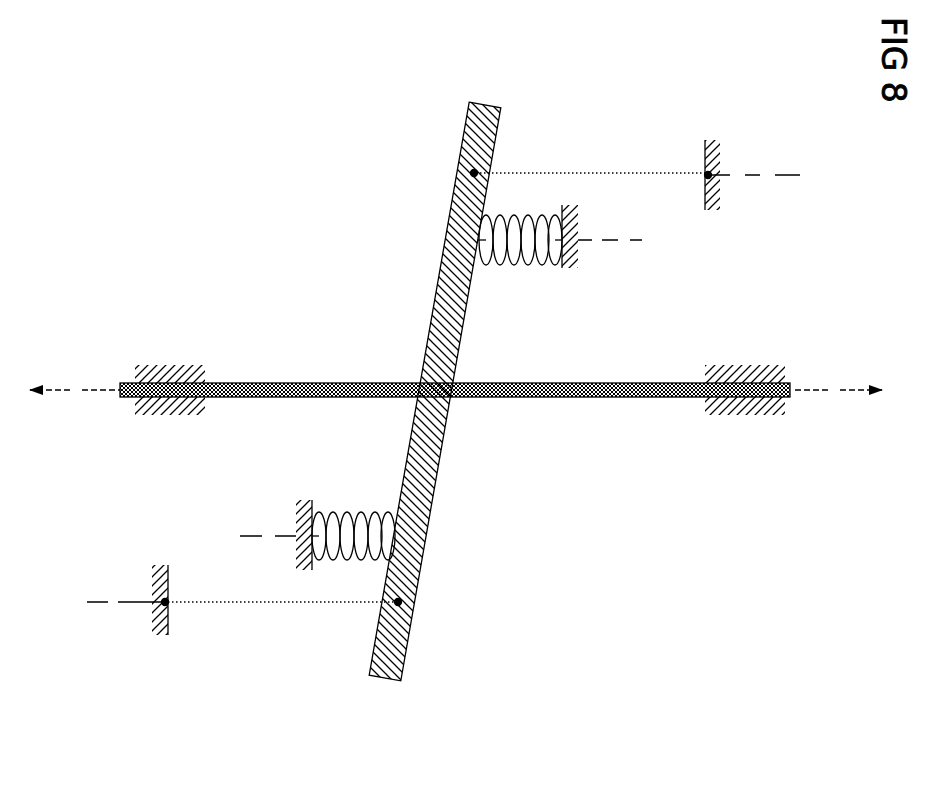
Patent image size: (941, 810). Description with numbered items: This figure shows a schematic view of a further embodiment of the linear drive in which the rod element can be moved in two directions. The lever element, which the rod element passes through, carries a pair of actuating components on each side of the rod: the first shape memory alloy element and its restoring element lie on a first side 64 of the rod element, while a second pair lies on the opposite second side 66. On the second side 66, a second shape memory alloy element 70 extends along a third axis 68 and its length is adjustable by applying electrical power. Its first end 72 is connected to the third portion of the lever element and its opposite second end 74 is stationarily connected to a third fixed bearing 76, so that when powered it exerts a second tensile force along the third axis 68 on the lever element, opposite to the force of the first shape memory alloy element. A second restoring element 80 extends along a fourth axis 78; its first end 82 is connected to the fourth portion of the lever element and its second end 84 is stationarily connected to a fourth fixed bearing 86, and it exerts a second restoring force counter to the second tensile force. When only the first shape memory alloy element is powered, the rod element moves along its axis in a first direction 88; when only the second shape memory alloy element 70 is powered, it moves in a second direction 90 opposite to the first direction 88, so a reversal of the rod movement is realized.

The first side 64 is at (442, 232).
The second side 66 is at (460, 405).
The third axis 68 is at (450, 160).
The second shape memory alloy element 70 is at (579, 170).
The first end 72 is at (468, 128).
The second end 74 is at (805, 393).
The third fixed bearing 76 is at (718, 190).
The fourth axis 78 is at (610, 243).
The second restoring element 80 is at (526, 242).
The first end 82 is at (250, 532).
The second end 84 is at (562, 268).
The fourth fixed bearing 86 is at (575, 255).
The first direction 88 is at (58, 393).
The second direction 90 is at (848, 393).